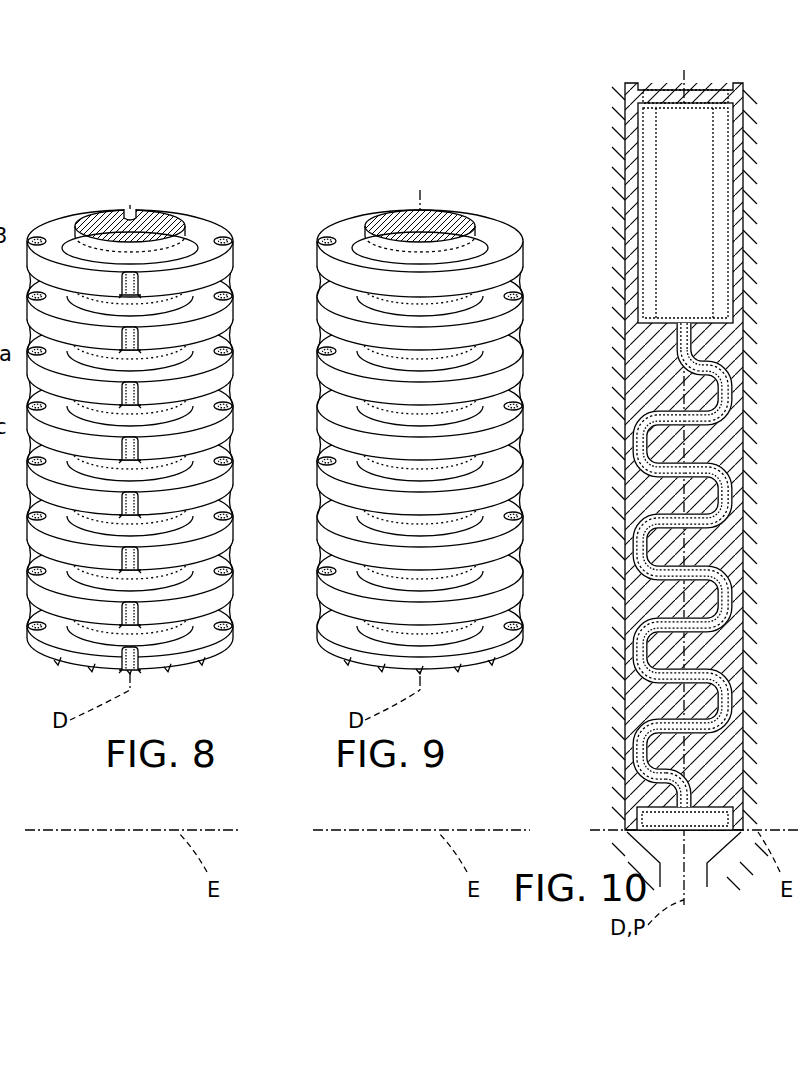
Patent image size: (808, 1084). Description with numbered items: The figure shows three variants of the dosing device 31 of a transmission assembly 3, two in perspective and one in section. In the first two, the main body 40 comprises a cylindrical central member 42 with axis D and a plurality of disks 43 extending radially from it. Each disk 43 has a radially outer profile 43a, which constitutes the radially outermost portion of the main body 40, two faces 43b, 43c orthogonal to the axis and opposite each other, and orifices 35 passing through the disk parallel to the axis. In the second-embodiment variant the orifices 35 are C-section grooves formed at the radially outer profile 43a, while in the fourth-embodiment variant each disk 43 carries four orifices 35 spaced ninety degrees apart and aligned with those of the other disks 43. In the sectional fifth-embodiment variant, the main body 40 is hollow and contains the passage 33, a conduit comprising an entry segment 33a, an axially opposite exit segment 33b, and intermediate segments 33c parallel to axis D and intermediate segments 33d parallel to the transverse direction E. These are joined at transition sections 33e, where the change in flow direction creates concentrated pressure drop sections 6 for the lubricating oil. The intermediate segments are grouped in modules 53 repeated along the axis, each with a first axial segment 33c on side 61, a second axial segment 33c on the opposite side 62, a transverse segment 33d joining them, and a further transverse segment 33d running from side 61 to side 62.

In FIG. 8, the transmission assembly 3 is at (92, 168).
In FIG. 9, the transmission assembly 3 is at (390, 166).
In FIG. 10, the transmission assembly 3 is at (768, 135).
In FIG. 8, the dosing device 31 is at (196, 165).
In FIG. 9, the dosing device 31 is at (478, 166).
In FIG. 10, the dosing device 31 is at (597, 210).
In FIG. 8, the main body 40 is at (68, 205).
In FIG. 9, the main body 40 is at (355, 205).
In FIG. 10, the main body 40 is at (650, 500).
In FIG. 8, the orifices 35 is at (33, 238).
In FIG. 9, the orifices 35 is at (325, 238).
In FIG. 8, the concentrated pressure drop sections 6 is at (223, 238).
In FIG. 9, the concentrated pressure drop sections 6 is at (520, 287).
In FIG. 10, the concentrated pressure drop sections 6 is at (740, 440).
In FIG. 8, the central member 42 is at (152, 224).
In FIG. 9, the central member 42 is at (435, 222).
In FIG. 8, the disks 43 is at (227, 266).
In FIG. 9, the disks 43 is at (513, 322).
In FIG. 8, the radially outer profile 43a is at (240, 592).
In FIG. 9, the radially outer profile 43a is at (530, 592).
In FIG. 8, the face 43b is at (62, 632).
In FIG. 9, the face 43b is at (352, 632).
In FIG. 8, the face 43c is at (200, 633).
In FIG. 9, the face 43c is at (490, 633).
In FIG. 10, the passage 33 is at (731, 368).
In FIG. 10, the entry segment 33a is at (670, 352).
In FIG. 10, the exit segment 33b is at (673, 793).
In FIG. 10, the intermediate segment 33c is at (712, 405).
In FIG. 10, the intermediate segment 33d is at (672, 444).
In FIG. 10, the transition sections 33e is at (633, 578).
In FIG. 10, the modules 53 is at (757, 514).
In FIG. 10, the side 61 is at (768, 683).
In FIG. 10, the side 62 is at (598, 710).